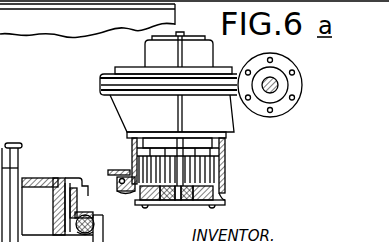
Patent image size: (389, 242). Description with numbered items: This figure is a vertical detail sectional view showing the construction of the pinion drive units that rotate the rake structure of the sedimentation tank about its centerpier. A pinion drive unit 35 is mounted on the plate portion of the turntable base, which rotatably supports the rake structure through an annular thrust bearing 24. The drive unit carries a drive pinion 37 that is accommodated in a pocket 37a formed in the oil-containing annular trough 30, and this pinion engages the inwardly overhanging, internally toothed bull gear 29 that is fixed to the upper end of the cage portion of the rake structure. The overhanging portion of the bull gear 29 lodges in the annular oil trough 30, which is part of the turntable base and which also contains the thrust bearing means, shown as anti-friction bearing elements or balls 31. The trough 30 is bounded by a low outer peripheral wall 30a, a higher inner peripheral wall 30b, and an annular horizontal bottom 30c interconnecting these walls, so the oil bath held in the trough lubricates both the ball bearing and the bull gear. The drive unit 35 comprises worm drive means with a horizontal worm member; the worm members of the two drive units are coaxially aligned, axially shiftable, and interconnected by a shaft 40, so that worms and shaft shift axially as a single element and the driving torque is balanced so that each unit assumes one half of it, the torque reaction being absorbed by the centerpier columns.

The pinion drive unit 35 is at (127, 66).
The shaft 40 is at (274, 90).
The drive pinion 37 is at (224, 165).
The pocket 37a is at (224, 193).
The annular thrust bearing 24 is at (97, 215).
The inner peripheral wall 30b is at (58, 180).
The annular horizontal bottom 30c is at (43, 180).
The annular oil trough 30 is at (66, 231).
The anti-friction bearing elements 31 is at (67, 213).
The bull gear 29 is at (85, 211).
The outer peripheral wall 30a is at (110, 232).